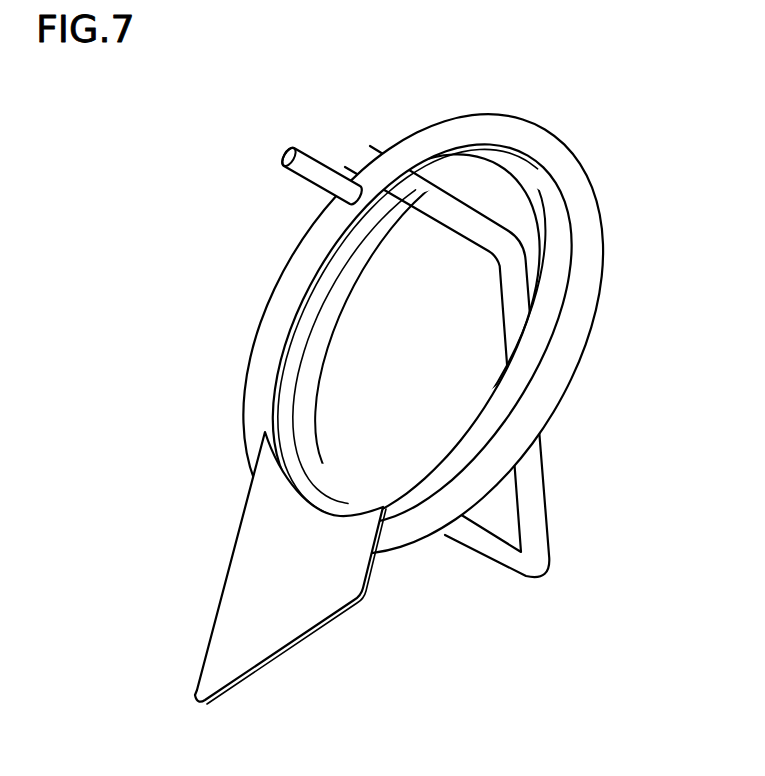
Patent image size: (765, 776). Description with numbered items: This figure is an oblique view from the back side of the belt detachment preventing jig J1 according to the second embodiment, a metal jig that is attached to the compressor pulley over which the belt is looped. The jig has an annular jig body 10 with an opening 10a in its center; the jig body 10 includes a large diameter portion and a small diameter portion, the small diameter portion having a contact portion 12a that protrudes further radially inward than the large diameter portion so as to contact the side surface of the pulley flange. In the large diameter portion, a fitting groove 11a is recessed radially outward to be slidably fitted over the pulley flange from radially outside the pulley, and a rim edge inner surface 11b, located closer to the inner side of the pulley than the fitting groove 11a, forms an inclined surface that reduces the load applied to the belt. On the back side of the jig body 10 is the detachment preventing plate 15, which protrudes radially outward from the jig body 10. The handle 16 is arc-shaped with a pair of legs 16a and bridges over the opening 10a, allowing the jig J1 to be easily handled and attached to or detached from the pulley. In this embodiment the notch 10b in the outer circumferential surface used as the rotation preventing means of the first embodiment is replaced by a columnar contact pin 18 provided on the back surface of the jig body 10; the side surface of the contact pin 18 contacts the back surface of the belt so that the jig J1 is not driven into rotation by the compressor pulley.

The belt detachment preventing jig J1 is at (218, 132).
The jig body 10 is at (421, 314).
The opening 10a is at (416, 412).
The notch 10b is at (258, 374).
The fitting groove 11a is at (404, 206).
The rim edge inner surface 11b is at (503, 132).
The contact portion 12a is at (417, 183).
The detachment preventing plate 15 is at (238, 597).
The handle 16 is at (545, 482).
The legs 16a is at (459, 221).
The contact pin 18 is at (311, 162).